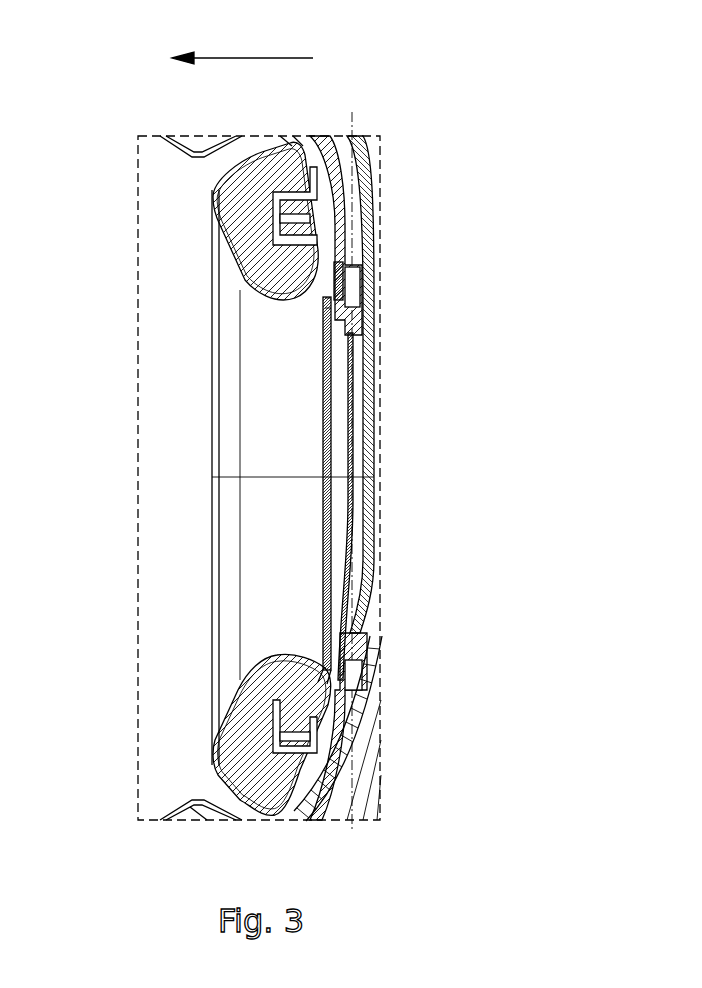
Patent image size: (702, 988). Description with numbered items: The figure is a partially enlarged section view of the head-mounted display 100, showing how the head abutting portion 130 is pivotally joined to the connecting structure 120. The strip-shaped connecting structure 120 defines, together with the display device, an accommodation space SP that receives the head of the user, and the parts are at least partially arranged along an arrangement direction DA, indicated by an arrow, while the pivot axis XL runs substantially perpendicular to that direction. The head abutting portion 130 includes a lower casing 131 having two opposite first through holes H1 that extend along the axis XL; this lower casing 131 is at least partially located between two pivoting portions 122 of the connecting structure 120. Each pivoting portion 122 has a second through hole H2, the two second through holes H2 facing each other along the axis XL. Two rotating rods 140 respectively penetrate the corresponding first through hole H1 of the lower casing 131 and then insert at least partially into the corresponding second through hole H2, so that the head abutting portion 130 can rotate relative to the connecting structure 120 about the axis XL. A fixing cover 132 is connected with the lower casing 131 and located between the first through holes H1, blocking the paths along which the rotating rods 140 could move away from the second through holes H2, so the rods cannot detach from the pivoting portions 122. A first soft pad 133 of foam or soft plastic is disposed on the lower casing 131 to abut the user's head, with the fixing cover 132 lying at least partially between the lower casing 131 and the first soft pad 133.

The head-mounted display 100 is at (666, 45).
The connecting structure 120 is at (366, 302).
The pivoting portion 122 is at (322, 280).
The head abutting portion 130 is at (552, 821).
The lower casing 131 is at (366, 378).
The fixing cover 132 is at (347, 358).
The first soft pad 133 is at (237, 228).
The rotating rod 140 is at (340, 282).
The accommodation space SP is at (186, 474).
The arrangement direction DA is at (260, 61).
The axis XL is at (348, 460).
The first through hole H1 is at (327, 308).
The second through hole H2 is at (330, 298).